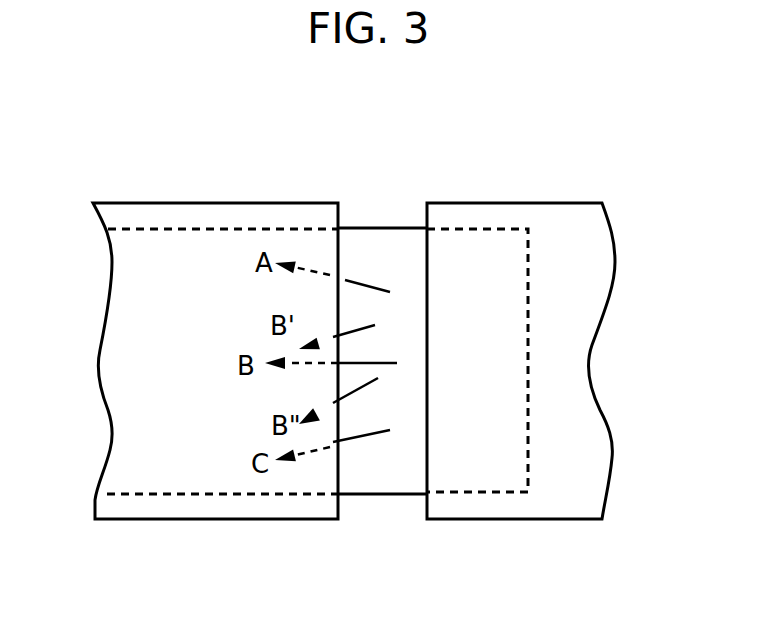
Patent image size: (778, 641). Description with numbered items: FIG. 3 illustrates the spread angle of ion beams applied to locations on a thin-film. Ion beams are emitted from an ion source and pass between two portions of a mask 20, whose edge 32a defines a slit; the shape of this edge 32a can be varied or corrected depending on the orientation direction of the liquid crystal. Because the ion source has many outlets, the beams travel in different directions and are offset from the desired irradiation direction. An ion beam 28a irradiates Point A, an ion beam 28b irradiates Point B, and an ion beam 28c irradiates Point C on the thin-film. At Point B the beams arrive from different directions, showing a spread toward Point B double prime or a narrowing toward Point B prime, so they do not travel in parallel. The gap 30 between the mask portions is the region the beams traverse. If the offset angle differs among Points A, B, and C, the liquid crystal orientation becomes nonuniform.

The mask 20 is at (168, 230).
The ion beam 28a is at (346, 281).
The ion beam 28b is at (383, 363).
The ion beam 28c is at (352, 442).
The gap between members 30 is at (390, 242).
The edge of the mask 32a is at (326, 250).